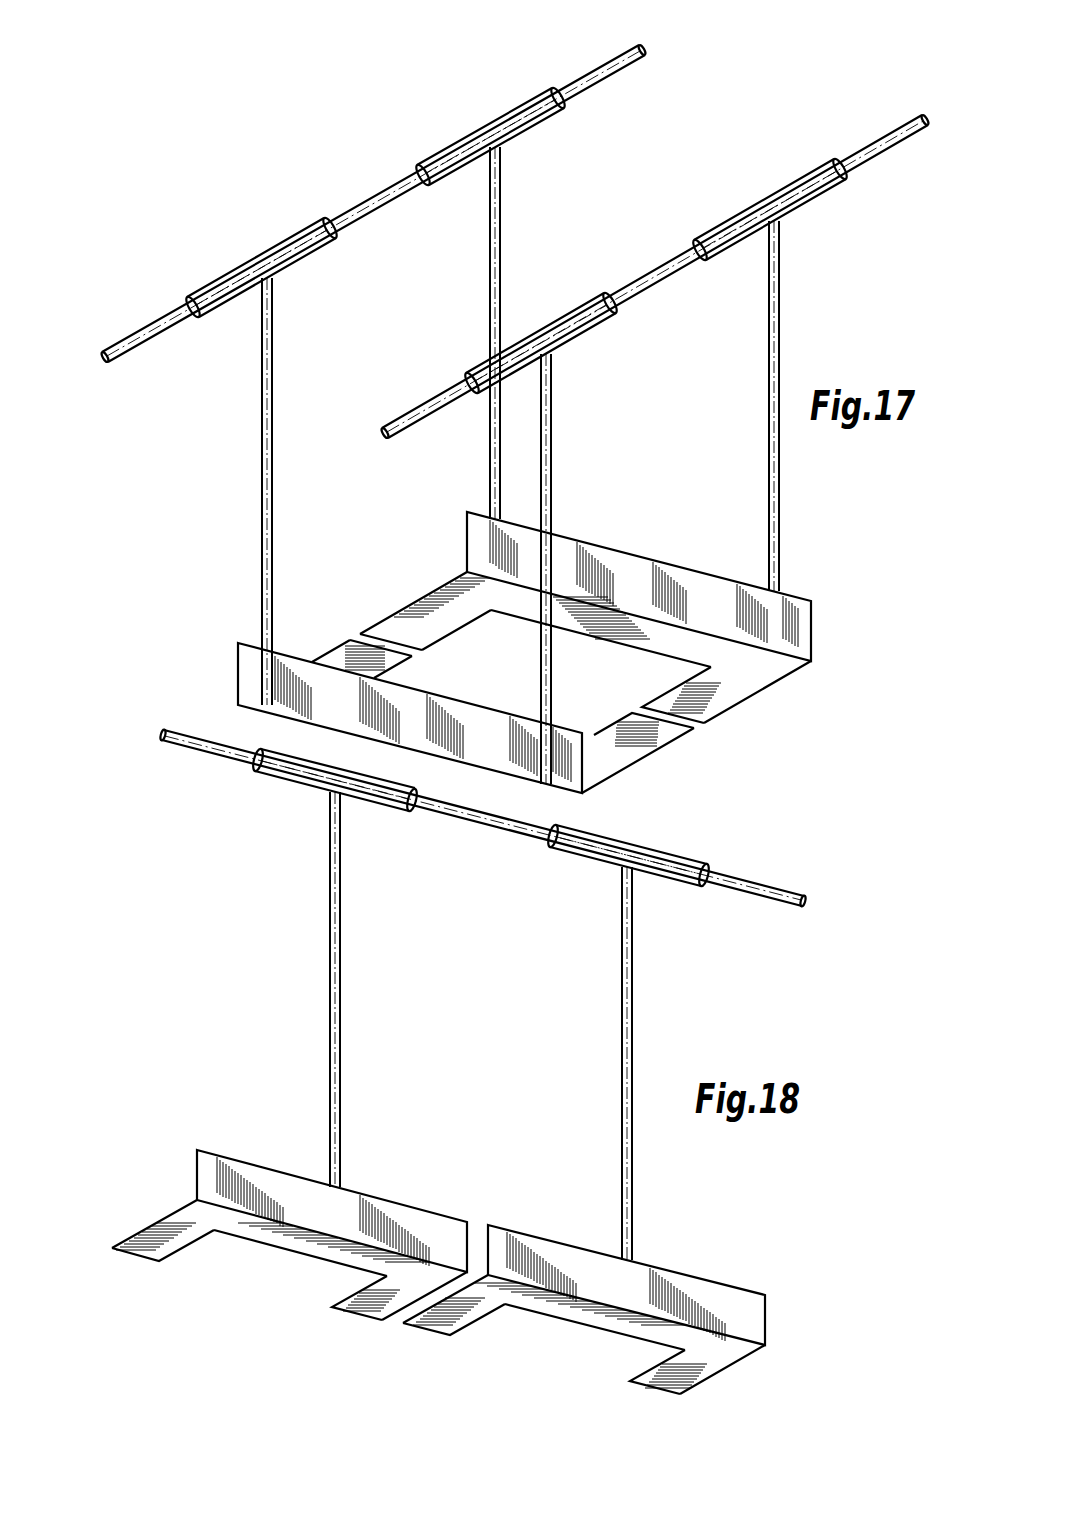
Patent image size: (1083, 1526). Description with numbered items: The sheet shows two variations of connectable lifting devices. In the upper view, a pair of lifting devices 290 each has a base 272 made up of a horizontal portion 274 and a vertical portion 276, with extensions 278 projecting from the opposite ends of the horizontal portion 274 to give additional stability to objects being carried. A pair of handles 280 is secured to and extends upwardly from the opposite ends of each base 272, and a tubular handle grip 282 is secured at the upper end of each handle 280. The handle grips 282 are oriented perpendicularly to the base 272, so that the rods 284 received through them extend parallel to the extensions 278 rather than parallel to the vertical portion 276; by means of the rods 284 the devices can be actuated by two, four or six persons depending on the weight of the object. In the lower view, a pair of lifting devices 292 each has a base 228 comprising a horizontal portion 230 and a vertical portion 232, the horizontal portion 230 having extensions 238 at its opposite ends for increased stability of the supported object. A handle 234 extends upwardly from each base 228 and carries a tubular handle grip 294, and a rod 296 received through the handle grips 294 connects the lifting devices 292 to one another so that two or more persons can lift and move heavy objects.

In FIG. 17, the base 272 is at (524, 619).
In FIG. 17, the horizontal portion 274 is at (465, 590).
In FIG. 17, the vertical portion 276 is at (601, 572).
In FIG. 17, the extensions 278 is at (365, 652).
In FIG. 17, the handles 280 is at (487, 487).
In FIG. 17, the handle grips 282 is at (477, 134).
In FIG. 17, the rod 284 is at (373, 197).
In FIG. 17, the lifting devices 290 is at (514, 414).
In FIG. 18, the lifting devices 292 is at (482, 994).
In FIG. 18, the handle grips 294 is at (283, 781).
In FIG. 18, the rod 296 is at (498, 830).
In FIG. 18, the handle 234 is at (325, 1016).
In FIG. 18, the base 228 is at (426, 1228).
In FIG. 18, the horizontal portion 230 is at (203, 1217).
In FIG. 18, the vertical portion 232 is at (243, 1175).
In FIG. 18, the extensions 238 is at (145, 1245).